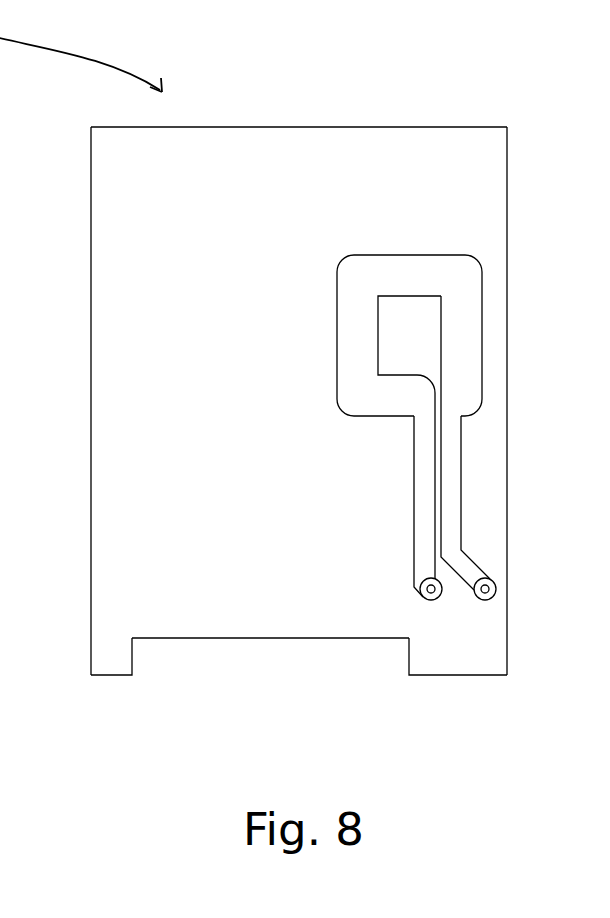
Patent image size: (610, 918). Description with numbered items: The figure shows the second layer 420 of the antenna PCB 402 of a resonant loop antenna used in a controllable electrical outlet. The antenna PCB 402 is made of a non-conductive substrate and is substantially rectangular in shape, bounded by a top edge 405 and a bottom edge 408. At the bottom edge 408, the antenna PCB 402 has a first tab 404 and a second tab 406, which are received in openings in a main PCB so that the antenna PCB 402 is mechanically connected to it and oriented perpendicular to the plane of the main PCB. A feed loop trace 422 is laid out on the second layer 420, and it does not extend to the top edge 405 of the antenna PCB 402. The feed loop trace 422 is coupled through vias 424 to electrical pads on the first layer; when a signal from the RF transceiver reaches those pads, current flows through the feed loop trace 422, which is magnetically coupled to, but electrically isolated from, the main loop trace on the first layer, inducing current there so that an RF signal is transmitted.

The antenna PCB 402 is at (100, 295).
The first tab 404 is at (472, 674).
The top edge 405 is at (337, 127).
The second tab 406 is at (113, 675).
The bottom edge 408 is at (247, 638).
The second layer 420 is at (255, 540).
The feed loop trace 422 is at (465, 332).
The vias 424 is at (433, 598).